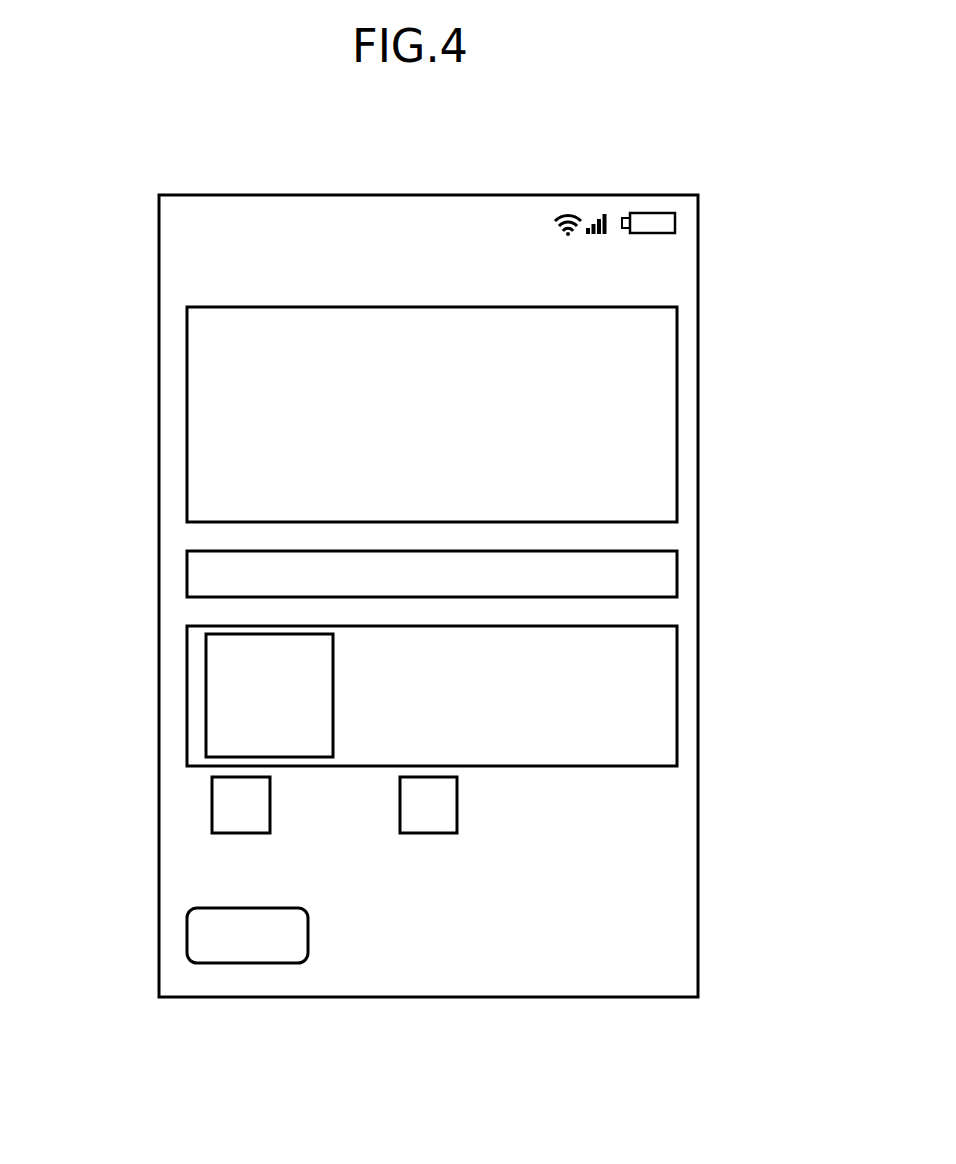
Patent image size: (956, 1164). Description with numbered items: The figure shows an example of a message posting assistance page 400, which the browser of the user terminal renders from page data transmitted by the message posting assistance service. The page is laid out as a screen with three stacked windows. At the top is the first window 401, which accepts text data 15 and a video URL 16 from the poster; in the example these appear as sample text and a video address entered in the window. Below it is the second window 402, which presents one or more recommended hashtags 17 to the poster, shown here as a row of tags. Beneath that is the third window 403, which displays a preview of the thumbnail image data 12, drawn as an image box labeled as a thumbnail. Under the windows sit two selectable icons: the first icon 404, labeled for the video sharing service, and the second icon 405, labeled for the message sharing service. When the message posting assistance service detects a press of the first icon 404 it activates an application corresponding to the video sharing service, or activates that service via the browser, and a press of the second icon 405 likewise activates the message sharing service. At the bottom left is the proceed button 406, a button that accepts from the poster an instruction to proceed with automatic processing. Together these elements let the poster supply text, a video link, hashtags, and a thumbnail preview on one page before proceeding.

The message posting assistance page 400 is at (684, 285).
The first window 401 is at (677, 415).
The second window 402 is at (677, 573).
The third window 403 is at (677, 697).
The first icon 404 is at (212, 803).
The second icon 405 is at (457, 805).
The proceed button 406 is at (183, 934).
The text data 15 is at (233, 352).
The video URL 16 is at (235, 448).
The recommended hashtags 17 is at (187, 573).
The thumbnail image data 12 is at (205, 685).